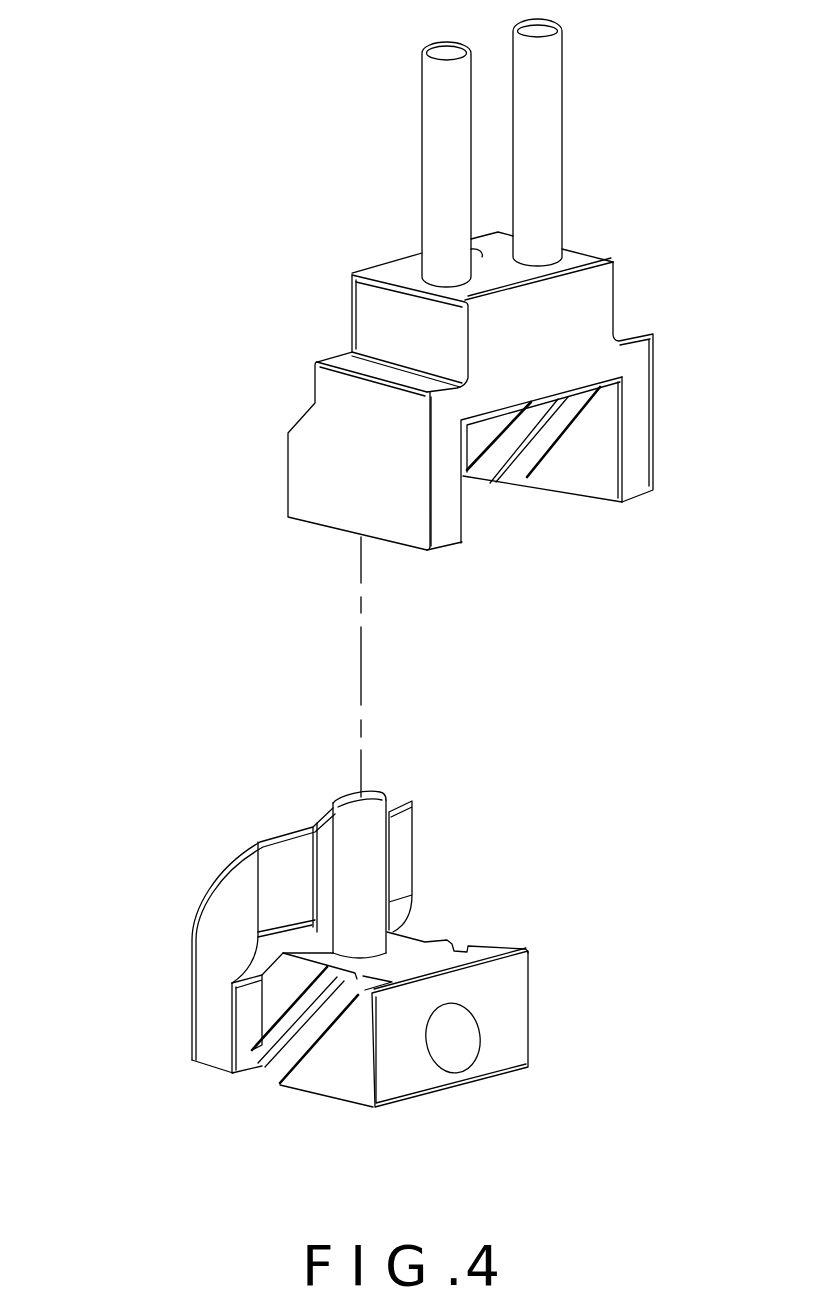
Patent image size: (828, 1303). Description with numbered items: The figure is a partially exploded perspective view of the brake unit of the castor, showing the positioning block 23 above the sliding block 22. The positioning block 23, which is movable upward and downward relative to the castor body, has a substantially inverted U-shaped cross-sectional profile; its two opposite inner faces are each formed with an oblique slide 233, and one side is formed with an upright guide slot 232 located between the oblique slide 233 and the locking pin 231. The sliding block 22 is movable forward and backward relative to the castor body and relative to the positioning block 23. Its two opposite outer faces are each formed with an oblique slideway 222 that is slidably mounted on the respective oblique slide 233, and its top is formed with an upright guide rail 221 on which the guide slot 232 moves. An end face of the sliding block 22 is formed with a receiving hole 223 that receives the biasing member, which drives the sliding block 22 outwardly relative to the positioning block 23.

The sliding block 22 is at (227, 925).
The upright guide rail 221 is at (362, 832).
The oblique slideway 222 is at (275, 1074).
The receiving hole 223 is at (458, 1043).
The positioning block 23 is at (335, 455).
The locking pin 231 is at (443, 105).
The upright guide slot 232 is at (415, 253).
The oblique slide 233 is at (495, 458).